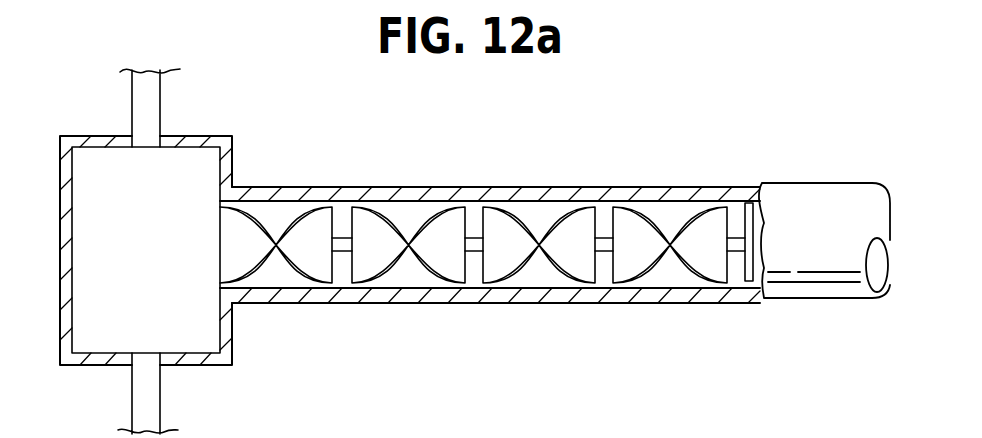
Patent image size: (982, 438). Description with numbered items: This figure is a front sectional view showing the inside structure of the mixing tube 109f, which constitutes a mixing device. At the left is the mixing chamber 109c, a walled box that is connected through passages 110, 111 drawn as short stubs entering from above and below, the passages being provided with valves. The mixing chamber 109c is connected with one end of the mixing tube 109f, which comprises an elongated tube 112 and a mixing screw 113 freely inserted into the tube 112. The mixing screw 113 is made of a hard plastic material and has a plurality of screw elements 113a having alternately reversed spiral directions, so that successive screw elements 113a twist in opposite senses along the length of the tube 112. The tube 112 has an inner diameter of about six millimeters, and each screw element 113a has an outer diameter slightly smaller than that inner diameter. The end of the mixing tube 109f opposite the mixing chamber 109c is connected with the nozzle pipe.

The mixing chamber 109c is at (202, 175).
The mixing tube 109f is at (509, 240).
The outlet tube 110 is at (152, 397).
The inlet tube 111 is at (150, 107).
The tube 112 is at (568, 293).
The mixing screw 113 is at (509, 248).
The screw element 113a is at (372, 225).